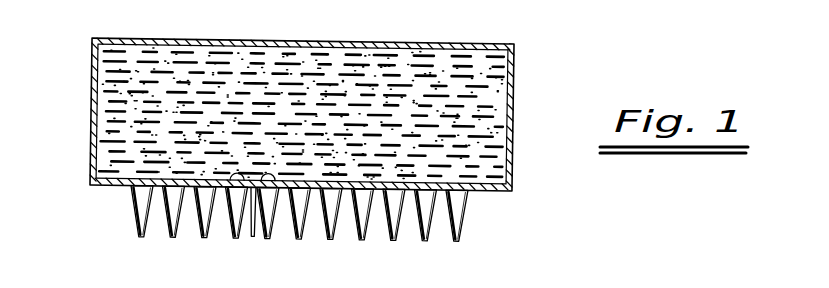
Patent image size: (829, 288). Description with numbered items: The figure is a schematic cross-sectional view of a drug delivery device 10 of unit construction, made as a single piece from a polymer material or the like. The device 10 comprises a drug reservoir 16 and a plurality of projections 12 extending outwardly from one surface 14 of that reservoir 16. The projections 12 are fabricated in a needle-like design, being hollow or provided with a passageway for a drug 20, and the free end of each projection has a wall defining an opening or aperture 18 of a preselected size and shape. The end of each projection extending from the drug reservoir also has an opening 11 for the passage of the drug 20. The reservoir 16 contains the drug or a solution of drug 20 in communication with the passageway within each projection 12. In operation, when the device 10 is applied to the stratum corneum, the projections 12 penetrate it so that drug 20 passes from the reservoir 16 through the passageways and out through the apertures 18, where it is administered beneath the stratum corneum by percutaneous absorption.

The drug delivery device 10 is at (519, 98).
The opening 11 is at (255, 238).
The projections 12 is at (166, 222).
The surface 14 is at (487, 192).
The drug reservoir 16 is at (95, 110).
The aperture 18 is at (363, 241).
The drug 20 is at (318, 80).